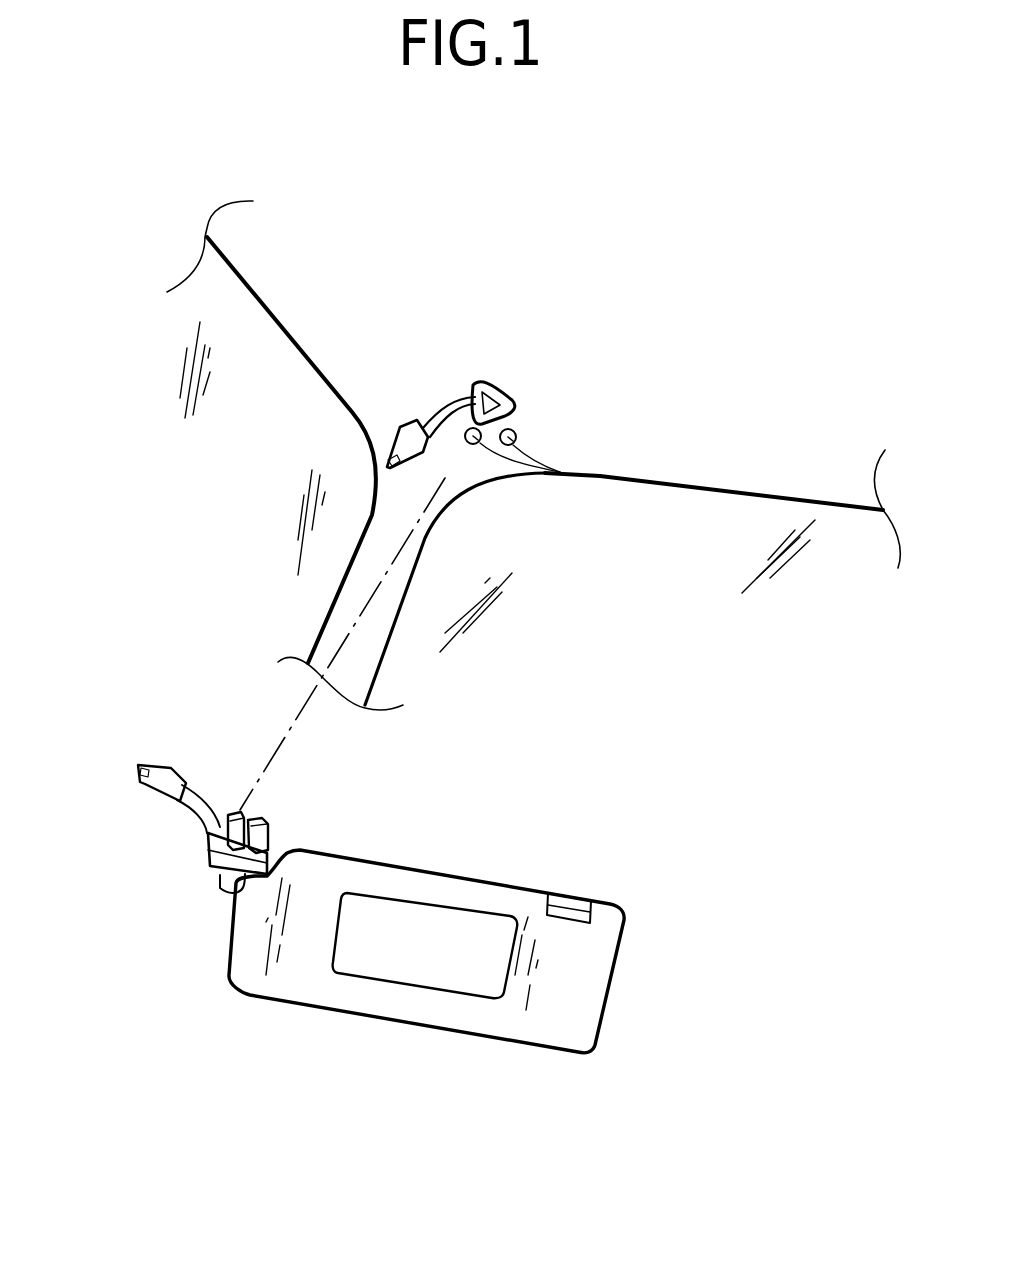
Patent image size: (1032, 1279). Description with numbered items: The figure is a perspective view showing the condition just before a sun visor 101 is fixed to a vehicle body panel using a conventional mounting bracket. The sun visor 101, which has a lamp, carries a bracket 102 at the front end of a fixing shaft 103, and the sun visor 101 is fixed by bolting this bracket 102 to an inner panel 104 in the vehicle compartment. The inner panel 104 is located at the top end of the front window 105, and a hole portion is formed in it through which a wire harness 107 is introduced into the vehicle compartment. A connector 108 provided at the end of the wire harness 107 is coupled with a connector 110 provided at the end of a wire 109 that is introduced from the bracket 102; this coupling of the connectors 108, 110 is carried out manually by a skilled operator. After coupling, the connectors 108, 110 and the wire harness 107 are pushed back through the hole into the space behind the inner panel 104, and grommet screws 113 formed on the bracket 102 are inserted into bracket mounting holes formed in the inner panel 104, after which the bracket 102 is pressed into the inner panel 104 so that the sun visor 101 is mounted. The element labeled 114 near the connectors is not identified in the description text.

The sun visor 101 is at (545, 1010).
The bracket 102 is at (208, 858).
The fixing shaft 103 is at (220, 880).
The inner panel 104 is at (335, 345).
The front window 105 is at (790, 513).
The wire harness 107 is at (437, 400).
The connector 108 is at (487, 377).
The wire 109 is at (236, 812).
The connector 110 is at (158, 760).
The grommet screws 113 is at (243, 811).
The wire harness 114 is at (560, 472).